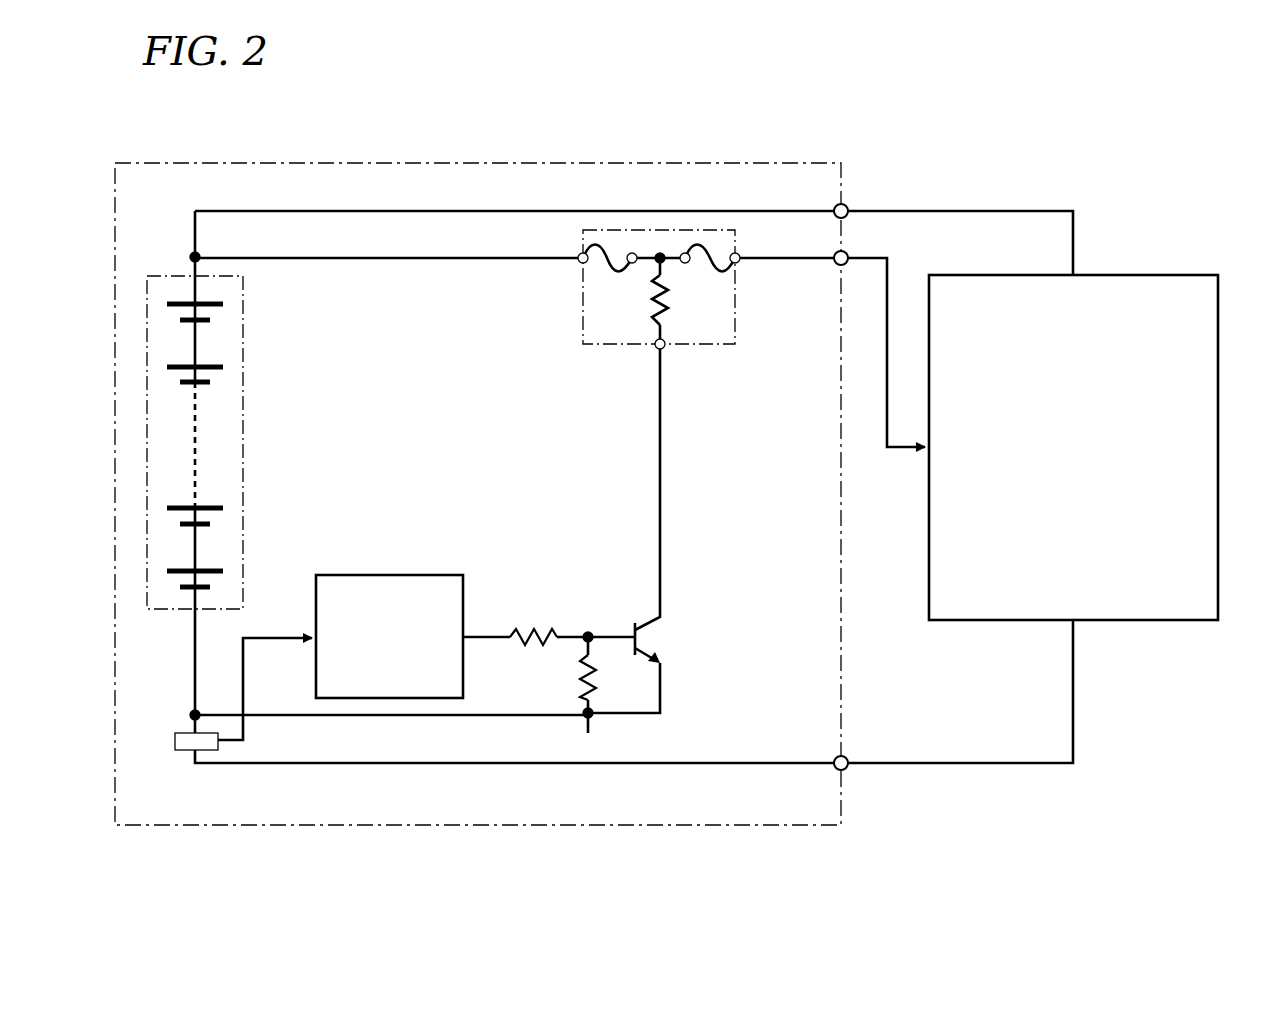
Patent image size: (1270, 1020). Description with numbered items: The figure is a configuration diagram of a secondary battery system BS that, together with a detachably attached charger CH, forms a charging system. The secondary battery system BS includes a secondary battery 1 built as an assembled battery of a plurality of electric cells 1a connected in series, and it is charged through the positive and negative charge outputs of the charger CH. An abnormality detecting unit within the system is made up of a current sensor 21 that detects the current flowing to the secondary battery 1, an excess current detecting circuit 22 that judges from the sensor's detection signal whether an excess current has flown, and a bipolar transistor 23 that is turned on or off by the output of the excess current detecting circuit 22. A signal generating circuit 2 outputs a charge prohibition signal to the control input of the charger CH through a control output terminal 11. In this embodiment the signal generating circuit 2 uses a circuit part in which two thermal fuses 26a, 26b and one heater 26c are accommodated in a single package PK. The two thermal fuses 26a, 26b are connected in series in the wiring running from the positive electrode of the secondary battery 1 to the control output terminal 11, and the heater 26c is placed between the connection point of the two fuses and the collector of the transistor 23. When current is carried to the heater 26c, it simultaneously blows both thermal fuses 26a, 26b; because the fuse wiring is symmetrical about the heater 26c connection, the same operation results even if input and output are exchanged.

The secondary battery 1 is at (237, 442).
The electric cell 1a is at (210, 320).
The signal generating circuit 2 is at (506, 382).
The control output terminal 11 is at (835, 265).
The current sensor 21 is at (183, 750).
The excess current detecting circuit 22 is at (390, 575).
The bipolar transistor 23 is at (645, 622).
The thermal fuse 26a is at (617, 265).
The thermal fuse 26b is at (705, 232).
The heater 26c is at (668, 315).
The secondary battery system BS is at (383, 163).
The package PK is at (627, 347).
The charger CH is at (1133, 275).